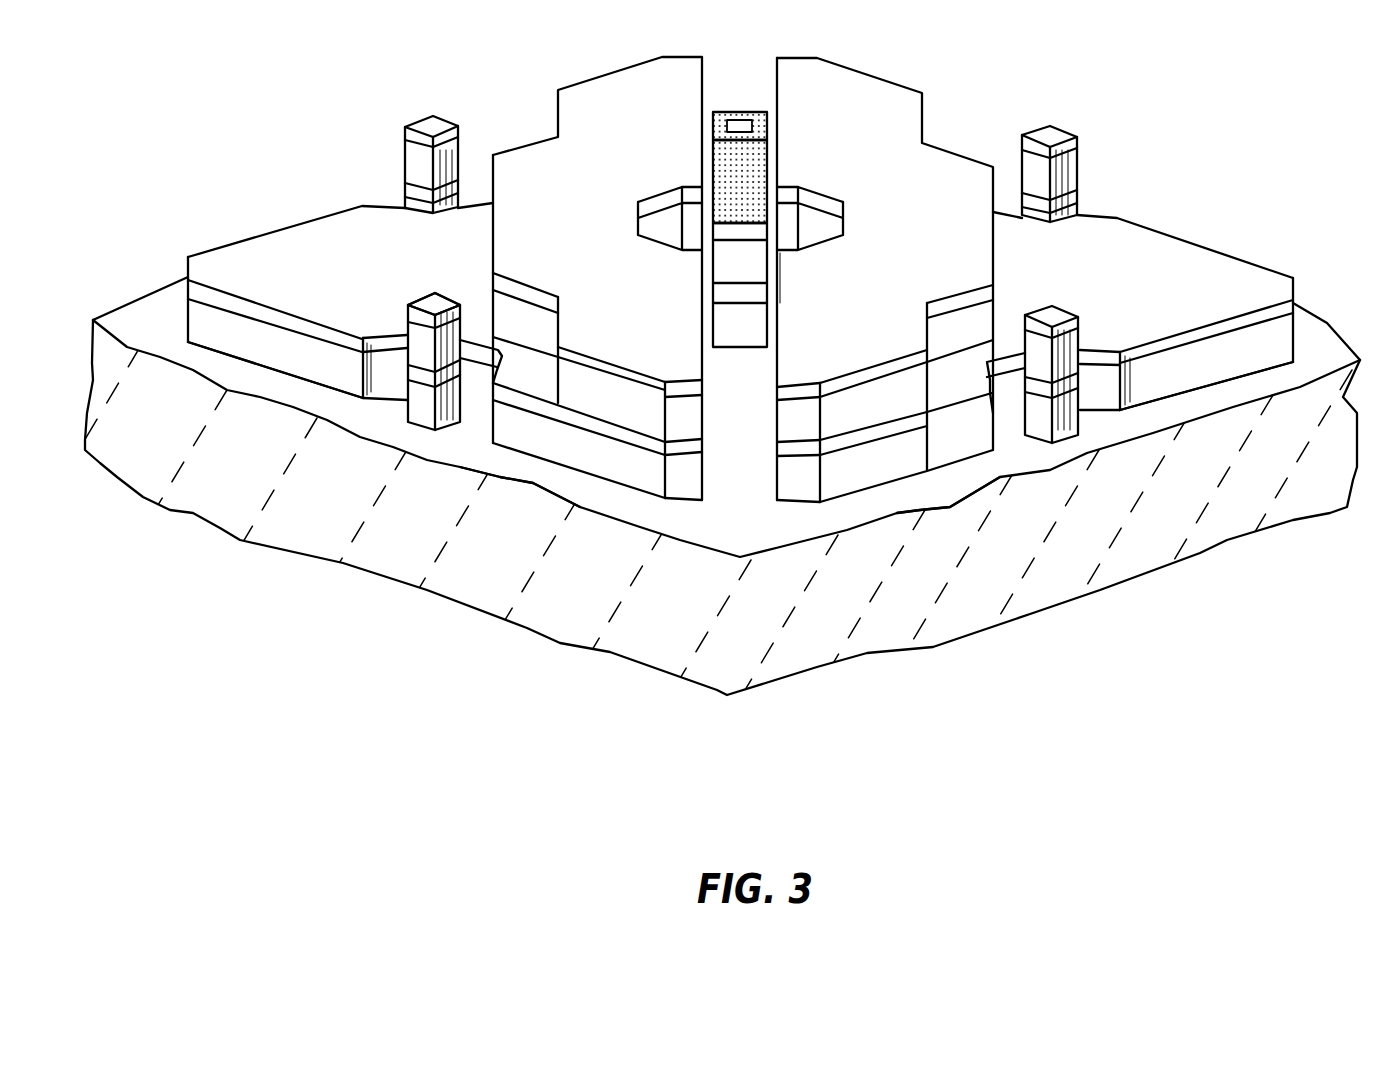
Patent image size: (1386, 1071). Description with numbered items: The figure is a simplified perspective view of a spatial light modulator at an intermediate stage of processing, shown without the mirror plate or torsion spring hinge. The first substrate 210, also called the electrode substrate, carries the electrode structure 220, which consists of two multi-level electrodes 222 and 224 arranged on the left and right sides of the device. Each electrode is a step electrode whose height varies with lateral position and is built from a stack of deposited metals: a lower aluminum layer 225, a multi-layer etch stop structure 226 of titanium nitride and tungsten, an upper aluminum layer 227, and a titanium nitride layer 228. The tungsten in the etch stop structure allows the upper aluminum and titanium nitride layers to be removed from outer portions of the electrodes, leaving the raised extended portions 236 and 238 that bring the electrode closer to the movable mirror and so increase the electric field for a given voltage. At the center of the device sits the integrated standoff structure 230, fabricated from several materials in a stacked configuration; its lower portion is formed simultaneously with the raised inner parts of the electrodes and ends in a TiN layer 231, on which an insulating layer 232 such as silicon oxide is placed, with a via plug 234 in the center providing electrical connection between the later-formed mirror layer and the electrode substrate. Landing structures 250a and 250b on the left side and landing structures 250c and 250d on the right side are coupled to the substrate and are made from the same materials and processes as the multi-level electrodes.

The substrate 210 is at (220, 497).
The electrode structure 220 is at (287, 197).
The multi-level electrode 222 is at (537, 494).
The multi-level electrode 224 is at (937, 517).
The aluminum layer 225 is at (422, 400).
The multi-layer etch stop structure 226 is at (1220, 273).
The aluminum layer 227 is at (418, 347).
The titanium nitride layer 228 is at (418, 315).
The integrated standoff structure 230 is at (741, 381).
The TiN layer 231 is at (753, 230).
The insulating layer 232 is at (748, 177).
The via plug 234 is at (750, 127).
The extended portion 236 is at (558, 238).
The extended portion 238 is at (975, 239).
The landing structure 250a is at (429, 460).
The landing structure 250b is at (377, 149).
The landing structure 250c is at (1076, 470).
The landing structure 250d is at (1100, 150).